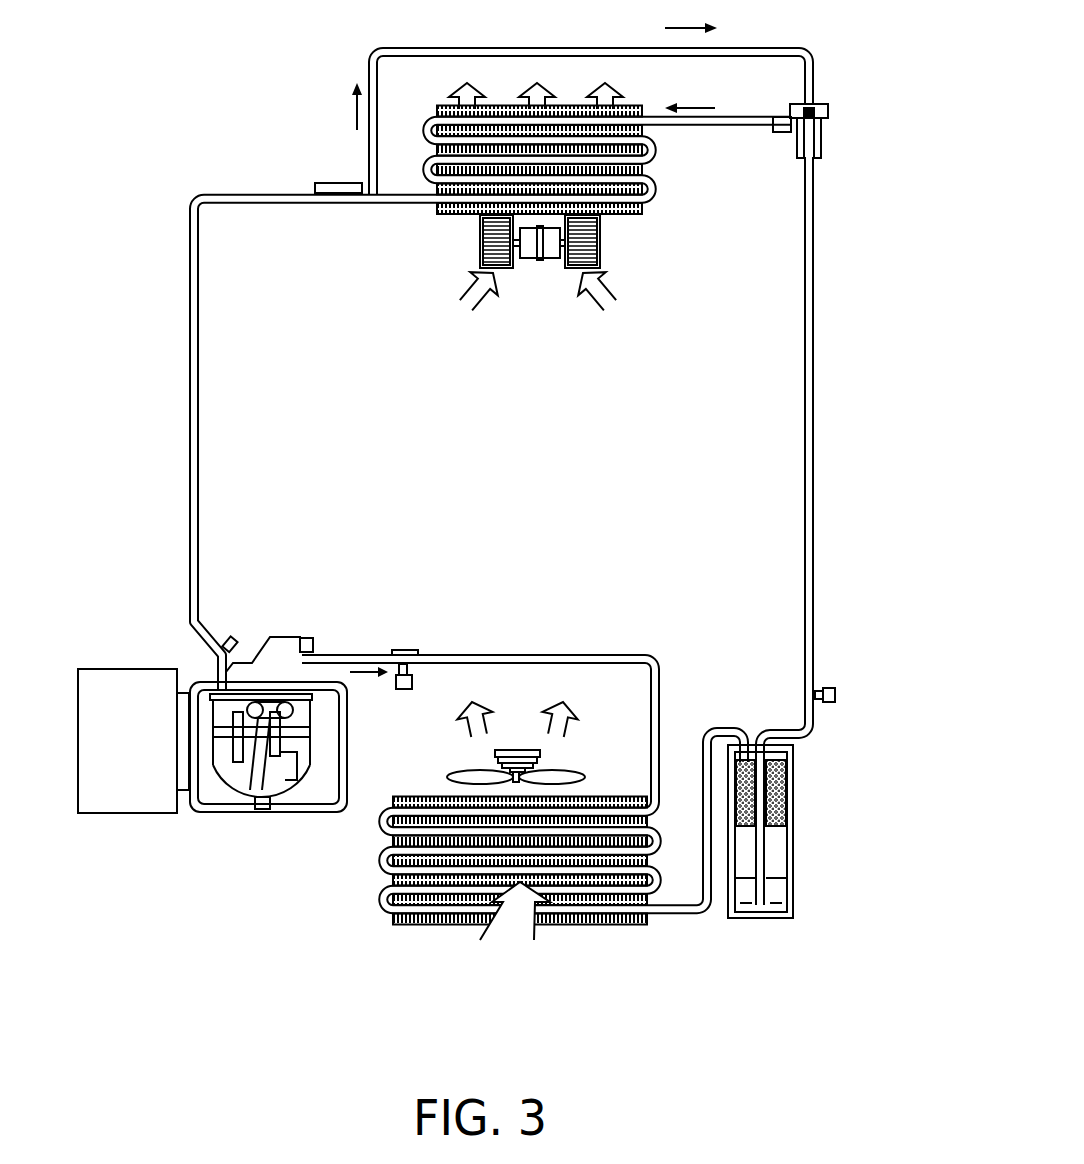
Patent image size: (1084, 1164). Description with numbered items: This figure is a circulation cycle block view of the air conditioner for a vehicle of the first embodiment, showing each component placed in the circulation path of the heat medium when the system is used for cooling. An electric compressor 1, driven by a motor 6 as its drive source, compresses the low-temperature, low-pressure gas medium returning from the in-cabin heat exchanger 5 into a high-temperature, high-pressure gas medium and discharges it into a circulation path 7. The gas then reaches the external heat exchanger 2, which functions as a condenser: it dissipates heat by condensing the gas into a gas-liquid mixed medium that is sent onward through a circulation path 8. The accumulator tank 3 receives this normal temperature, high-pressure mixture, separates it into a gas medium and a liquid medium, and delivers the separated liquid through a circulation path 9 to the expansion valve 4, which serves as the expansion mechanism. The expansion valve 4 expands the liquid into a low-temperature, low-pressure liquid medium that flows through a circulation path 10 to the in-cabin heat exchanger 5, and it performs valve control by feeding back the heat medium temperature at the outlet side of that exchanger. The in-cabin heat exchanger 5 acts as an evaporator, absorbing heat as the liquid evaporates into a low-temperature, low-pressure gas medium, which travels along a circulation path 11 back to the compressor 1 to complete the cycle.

The compressor 1 is at (263, 820).
The external heat exchanger 2 is at (566, 930).
The accumulator tank 3 is at (802, 848).
The expansion valve 4 is at (823, 108).
The in-cabin heat exchanger 5 is at (647, 207).
The motor 6 is at (108, 667).
The circulation path 7 is at (512, 652).
The circulation path 8 is at (678, 912).
The circulation path 9 is at (818, 428).
The circulation path 10 is at (699, 128).
The circulation path 11 is at (201, 380).